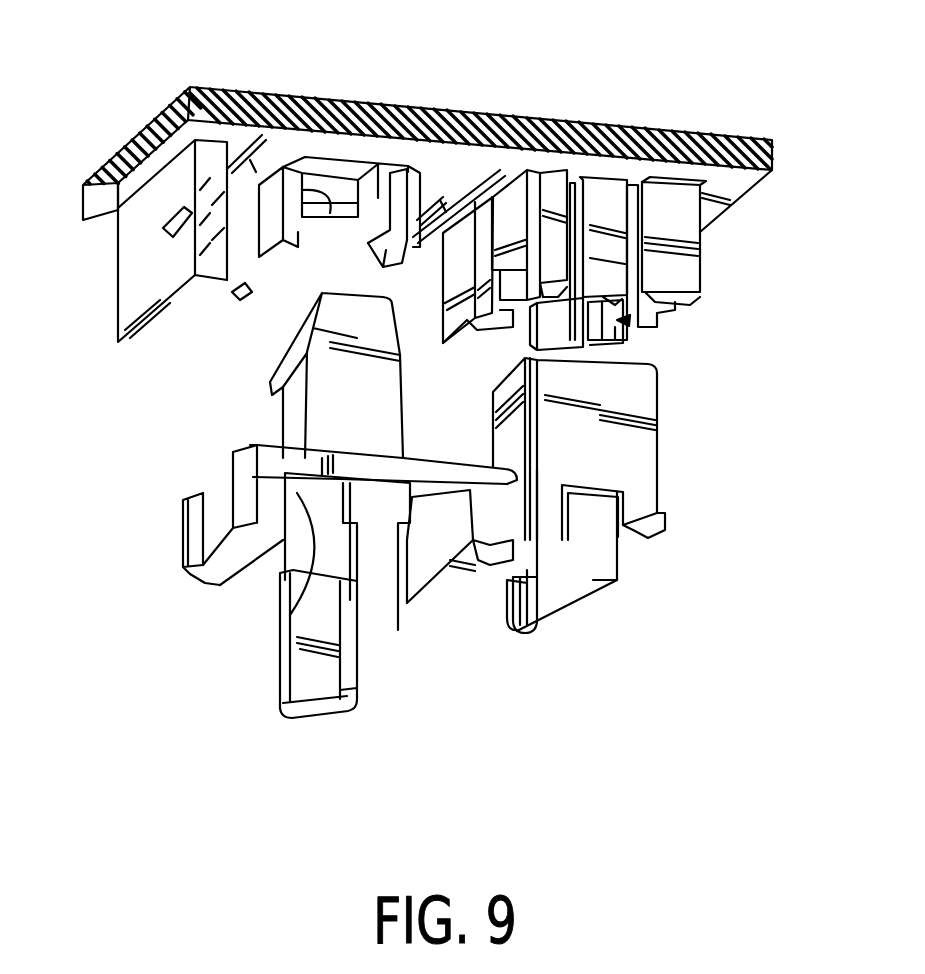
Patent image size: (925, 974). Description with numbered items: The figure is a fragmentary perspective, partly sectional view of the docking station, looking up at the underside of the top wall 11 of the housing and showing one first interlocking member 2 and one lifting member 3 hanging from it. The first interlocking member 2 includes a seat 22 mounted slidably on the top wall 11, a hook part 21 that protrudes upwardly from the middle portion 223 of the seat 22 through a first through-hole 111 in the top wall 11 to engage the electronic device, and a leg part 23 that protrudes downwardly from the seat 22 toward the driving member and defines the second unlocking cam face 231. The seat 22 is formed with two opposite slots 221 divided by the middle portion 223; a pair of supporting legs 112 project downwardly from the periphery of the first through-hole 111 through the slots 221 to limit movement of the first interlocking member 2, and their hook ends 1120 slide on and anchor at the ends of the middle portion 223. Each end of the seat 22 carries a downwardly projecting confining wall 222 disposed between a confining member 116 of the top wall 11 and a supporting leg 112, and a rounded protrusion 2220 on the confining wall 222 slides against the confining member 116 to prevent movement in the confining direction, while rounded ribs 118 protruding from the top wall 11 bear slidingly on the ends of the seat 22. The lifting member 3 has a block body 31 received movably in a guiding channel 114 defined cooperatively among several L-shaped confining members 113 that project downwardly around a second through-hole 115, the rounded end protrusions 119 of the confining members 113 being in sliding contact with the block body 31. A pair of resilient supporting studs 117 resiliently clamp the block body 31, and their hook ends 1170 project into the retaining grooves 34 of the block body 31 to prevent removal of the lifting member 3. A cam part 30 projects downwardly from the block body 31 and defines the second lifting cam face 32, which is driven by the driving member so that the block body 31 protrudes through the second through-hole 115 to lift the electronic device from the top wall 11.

The top wall 11 is at (147, 135).
The rounded ribs 118 is at (252, 168).
The first through-holes 111 is at (332, 172).
The supporting legs 112 is at (305, 192).
The confining members 113 is at (557, 193).
The second through-holes 115 is at (577, 173).
The resilient supporting studs 117 is at (603, 197).
The guiding channel 114 is at (627, 330).
The hook end 1170 is at (590, 278).
The rounded end protrusions 119 is at (620, 320).
The confining members 116 is at (163, 315).
The hook ends 1120 is at (240, 296).
The hook part 21 is at (293, 400).
The middle portion 223 is at (375, 468).
The seat 22 is at (250, 476).
The rounded protrusion 2220 is at (200, 538).
The confining wall 222 is at (183, 563).
The slots 221 is at (338, 551).
The leg part 23 is at (383, 677).
The second unlocking cam face 231 is at (400, 682).
The block body 31 is at (620, 440).
The retaining grooves 34 is at (587, 497).
The cam part 30 is at (597, 583).
The second lifting cam face 32 is at (573, 611).
The lifting member 3 is at (662, 613).
The first interlocking member 2 is at (248, 684).